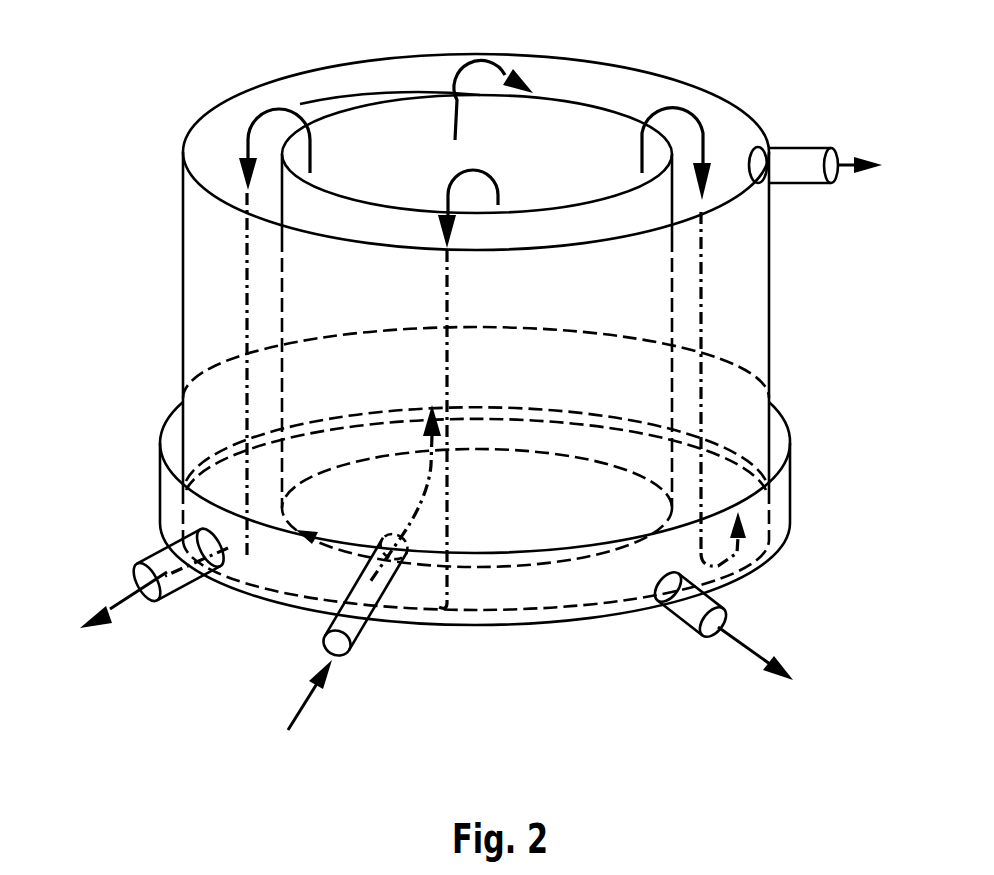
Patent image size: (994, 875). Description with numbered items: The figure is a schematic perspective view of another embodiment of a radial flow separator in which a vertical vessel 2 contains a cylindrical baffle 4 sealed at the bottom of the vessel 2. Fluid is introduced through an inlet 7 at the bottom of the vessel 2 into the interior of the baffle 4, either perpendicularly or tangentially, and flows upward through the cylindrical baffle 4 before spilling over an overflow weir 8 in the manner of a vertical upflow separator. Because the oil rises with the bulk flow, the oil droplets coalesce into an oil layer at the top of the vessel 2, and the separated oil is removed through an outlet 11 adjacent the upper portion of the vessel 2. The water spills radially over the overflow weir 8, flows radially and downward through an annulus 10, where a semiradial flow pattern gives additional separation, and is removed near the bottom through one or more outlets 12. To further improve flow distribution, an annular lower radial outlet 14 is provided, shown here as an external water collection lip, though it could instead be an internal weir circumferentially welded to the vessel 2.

The vertical vessel 2 is at (156, 278).
The cylindrical baffle 4 is at (532, 110).
The inlet 7 is at (363, 627).
The overflow weir 8 is at (336, 125).
The annulus 10 is at (215, 366).
The outlet 11 is at (787, 157).
The outlets 12 is at (197, 577).
The annular lower radial outlet 14 is at (160, 433).